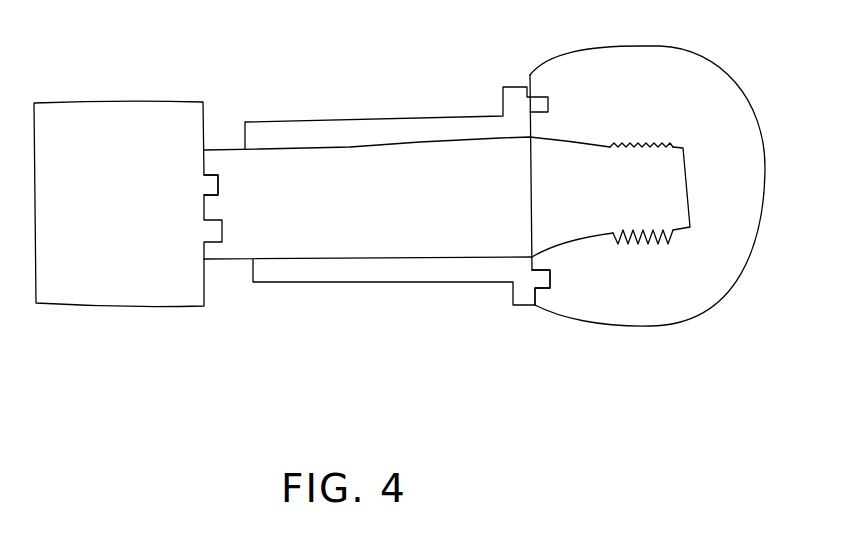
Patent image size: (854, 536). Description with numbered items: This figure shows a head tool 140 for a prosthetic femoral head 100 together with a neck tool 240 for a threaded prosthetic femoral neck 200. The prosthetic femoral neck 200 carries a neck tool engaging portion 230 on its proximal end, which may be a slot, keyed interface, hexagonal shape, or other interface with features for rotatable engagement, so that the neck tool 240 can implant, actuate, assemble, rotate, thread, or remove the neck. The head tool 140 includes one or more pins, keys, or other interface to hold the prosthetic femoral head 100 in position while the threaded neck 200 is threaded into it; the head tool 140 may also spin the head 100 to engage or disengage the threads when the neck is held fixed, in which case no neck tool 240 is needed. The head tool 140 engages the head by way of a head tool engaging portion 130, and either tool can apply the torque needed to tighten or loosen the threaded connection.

The prosthetic femoral head 100 is at (690, 107).
The head tool engaging portion 130 is at (563, 275).
The head tool 140 is at (472, 127).
The prosthetic femoral neck 200 is at (386, 218).
The neck tool engaging portion 230 is at (229, 188).
The neck tool 240 is at (139, 292).